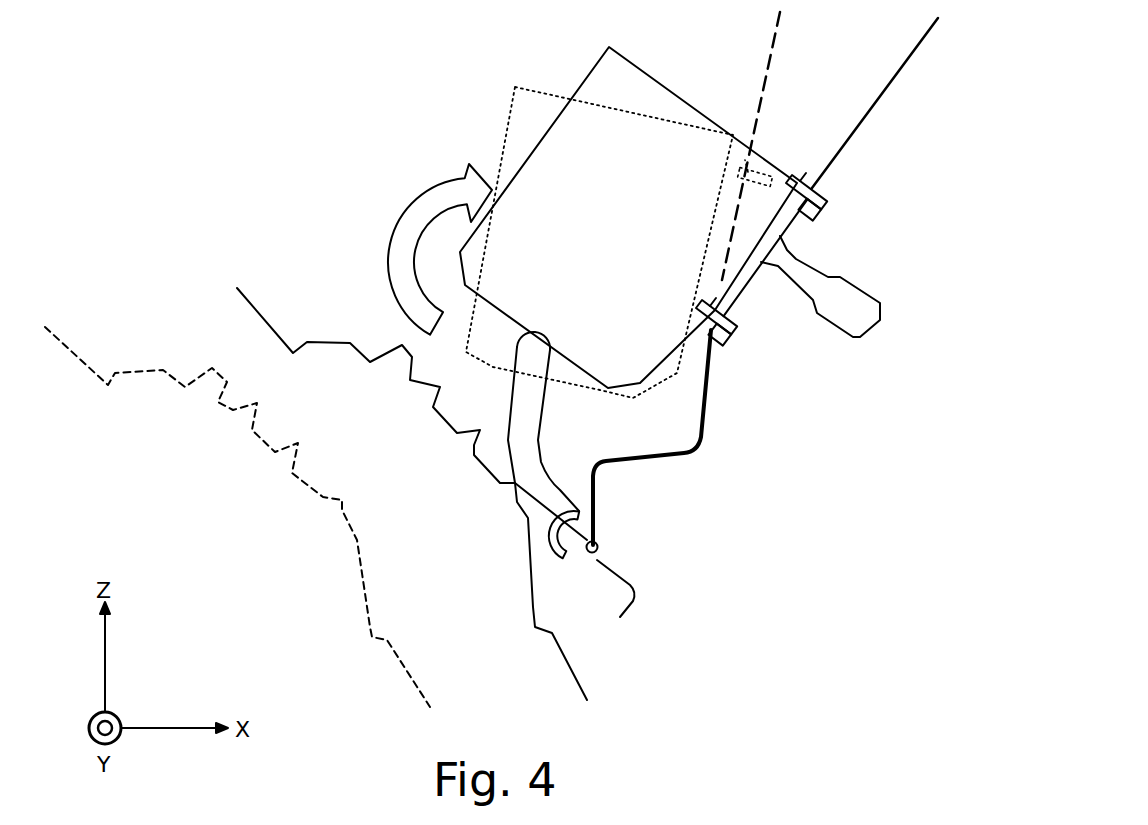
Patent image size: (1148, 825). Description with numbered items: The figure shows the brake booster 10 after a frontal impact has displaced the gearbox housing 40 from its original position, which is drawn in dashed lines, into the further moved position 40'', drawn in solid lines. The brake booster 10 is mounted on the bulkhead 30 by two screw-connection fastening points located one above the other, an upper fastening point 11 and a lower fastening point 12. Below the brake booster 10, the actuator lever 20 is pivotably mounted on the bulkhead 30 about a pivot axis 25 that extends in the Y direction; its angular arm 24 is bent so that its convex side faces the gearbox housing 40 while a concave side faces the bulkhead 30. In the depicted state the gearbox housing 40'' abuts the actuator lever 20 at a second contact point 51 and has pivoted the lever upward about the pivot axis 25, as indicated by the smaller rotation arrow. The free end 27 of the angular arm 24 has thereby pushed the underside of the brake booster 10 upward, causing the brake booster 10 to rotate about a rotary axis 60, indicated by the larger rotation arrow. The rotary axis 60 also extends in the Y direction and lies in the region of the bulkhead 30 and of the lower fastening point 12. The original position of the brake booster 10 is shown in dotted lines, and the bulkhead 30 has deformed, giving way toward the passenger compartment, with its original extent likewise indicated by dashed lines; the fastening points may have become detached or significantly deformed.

The brake booster 10 is at (627, 78).
The upper fastening point 11 is at (815, 207).
The lower fastening point 12 is at (728, 325).
The actuator lever 20 is at (552, 441).
The angular arm 24 is at (520, 408).
The pivot axis 25 is at (592, 556).
The free end 27 is at (538, 340).
The bulkhead 30 is at (888, 92).
The gearbox housing 40 is at (237, 517).
The gearbox housing in further moved position 40'' is at (376, 350).
The second contact point 51 is at (500, 490).
The rotary axis 60 is at (712, 335).